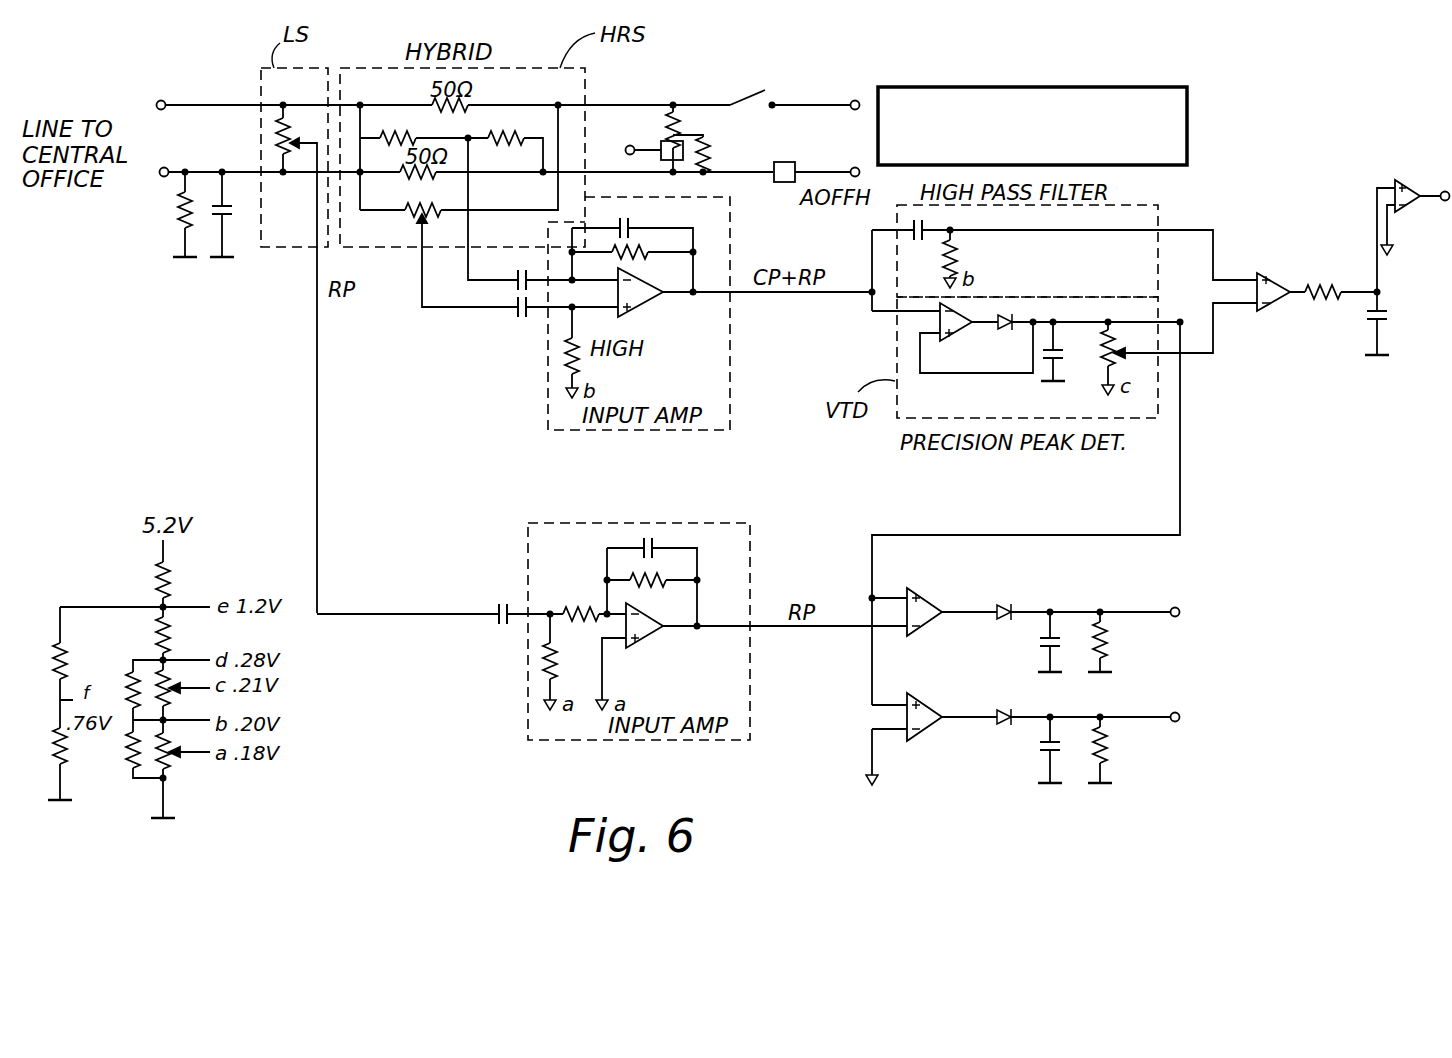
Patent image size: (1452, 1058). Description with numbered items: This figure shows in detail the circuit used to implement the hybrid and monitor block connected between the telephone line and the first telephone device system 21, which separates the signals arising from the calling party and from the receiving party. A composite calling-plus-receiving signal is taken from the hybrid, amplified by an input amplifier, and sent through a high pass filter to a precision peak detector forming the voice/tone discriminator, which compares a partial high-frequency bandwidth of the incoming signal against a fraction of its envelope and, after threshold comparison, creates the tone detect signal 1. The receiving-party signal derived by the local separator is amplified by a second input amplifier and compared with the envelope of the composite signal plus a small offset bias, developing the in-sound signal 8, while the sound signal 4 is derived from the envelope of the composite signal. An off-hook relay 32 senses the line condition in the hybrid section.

The off-hook relay OFFH 32 is at (650, 138).
The first telephone device system 21 is at (1032, 126).
The tone detect signal 1 is at (1413, 236).
The INSND signal 8 is at (1077, 630).
The SND signal 4 is at (1065, 742).